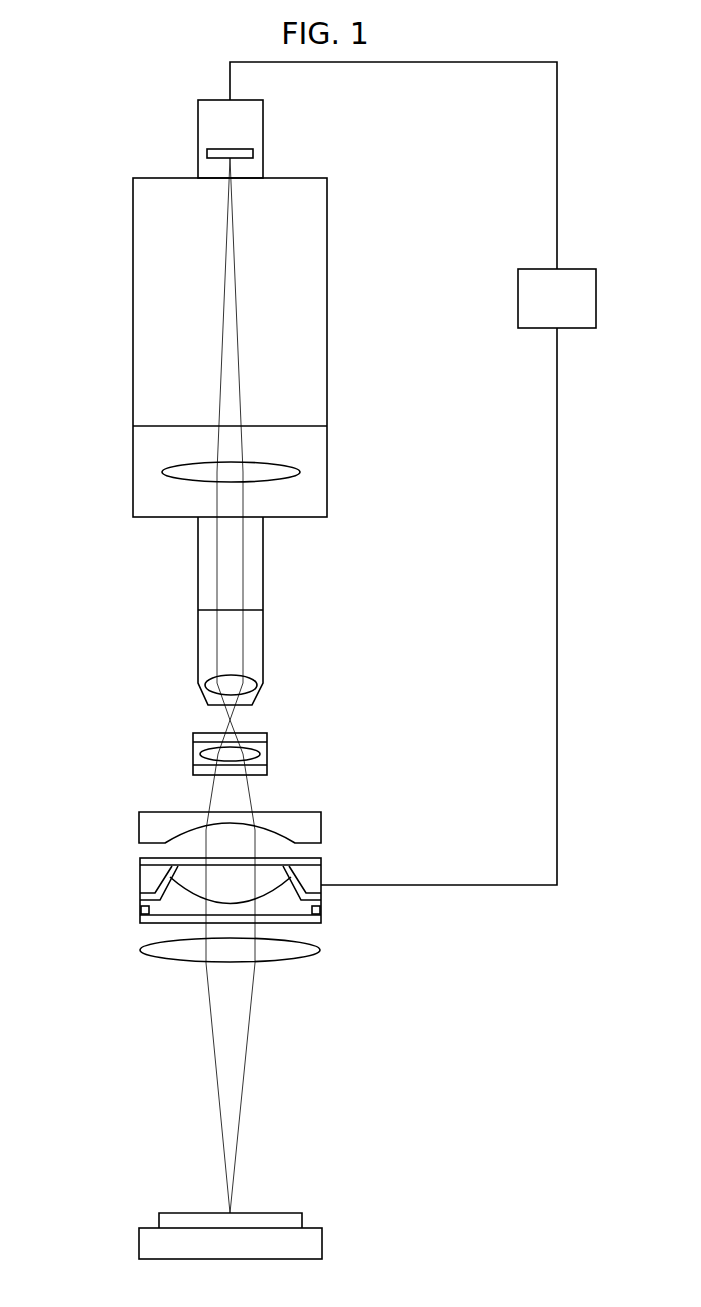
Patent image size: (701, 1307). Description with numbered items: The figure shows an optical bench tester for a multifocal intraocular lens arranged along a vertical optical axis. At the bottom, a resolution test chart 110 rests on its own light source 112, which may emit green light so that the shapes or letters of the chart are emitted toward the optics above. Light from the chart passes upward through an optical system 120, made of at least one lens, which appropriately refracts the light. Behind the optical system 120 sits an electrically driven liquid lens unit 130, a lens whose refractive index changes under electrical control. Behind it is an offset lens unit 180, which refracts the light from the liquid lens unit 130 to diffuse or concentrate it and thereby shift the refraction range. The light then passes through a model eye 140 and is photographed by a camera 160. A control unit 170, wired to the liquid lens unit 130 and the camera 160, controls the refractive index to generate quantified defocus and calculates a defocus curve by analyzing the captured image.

The resolution test chart 110 is at (159, 1220).
The light source 112 is at (139, 1243).
The optical system 120 is at (140, 949).
The electrically driven liquid lens unit 130 is at (140, 885).
The model eye 140 is at (193, 748).
The camera 160 is at (198, 136).
The control unit 170 is at (585, 268).
The offset lens unit 180 is at (139, 823).